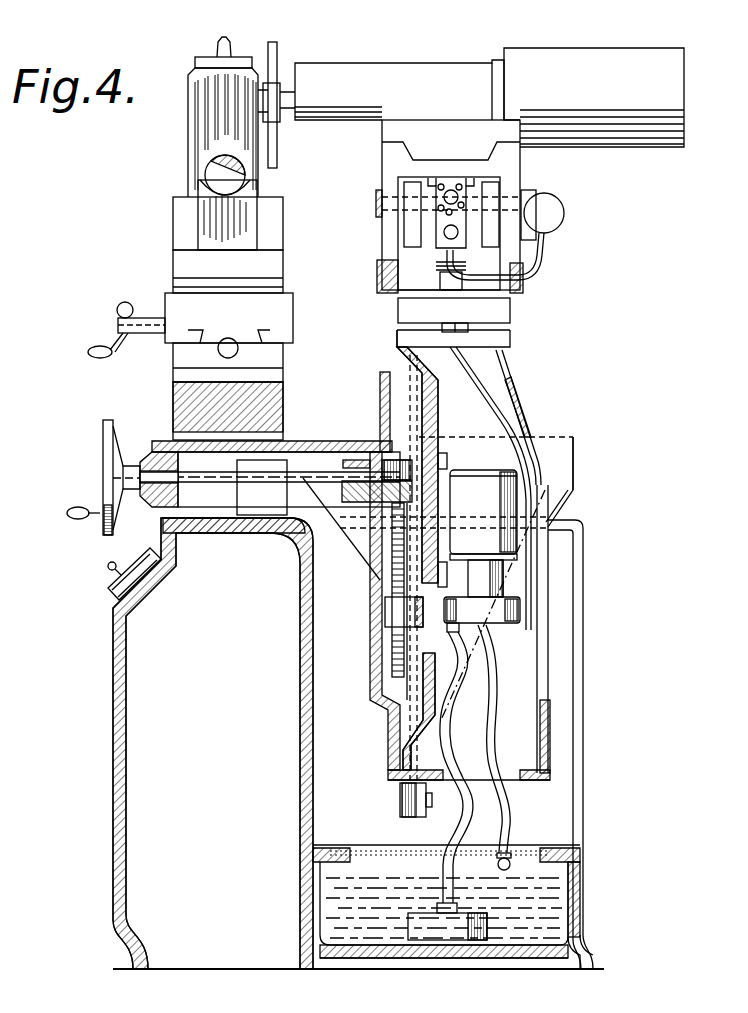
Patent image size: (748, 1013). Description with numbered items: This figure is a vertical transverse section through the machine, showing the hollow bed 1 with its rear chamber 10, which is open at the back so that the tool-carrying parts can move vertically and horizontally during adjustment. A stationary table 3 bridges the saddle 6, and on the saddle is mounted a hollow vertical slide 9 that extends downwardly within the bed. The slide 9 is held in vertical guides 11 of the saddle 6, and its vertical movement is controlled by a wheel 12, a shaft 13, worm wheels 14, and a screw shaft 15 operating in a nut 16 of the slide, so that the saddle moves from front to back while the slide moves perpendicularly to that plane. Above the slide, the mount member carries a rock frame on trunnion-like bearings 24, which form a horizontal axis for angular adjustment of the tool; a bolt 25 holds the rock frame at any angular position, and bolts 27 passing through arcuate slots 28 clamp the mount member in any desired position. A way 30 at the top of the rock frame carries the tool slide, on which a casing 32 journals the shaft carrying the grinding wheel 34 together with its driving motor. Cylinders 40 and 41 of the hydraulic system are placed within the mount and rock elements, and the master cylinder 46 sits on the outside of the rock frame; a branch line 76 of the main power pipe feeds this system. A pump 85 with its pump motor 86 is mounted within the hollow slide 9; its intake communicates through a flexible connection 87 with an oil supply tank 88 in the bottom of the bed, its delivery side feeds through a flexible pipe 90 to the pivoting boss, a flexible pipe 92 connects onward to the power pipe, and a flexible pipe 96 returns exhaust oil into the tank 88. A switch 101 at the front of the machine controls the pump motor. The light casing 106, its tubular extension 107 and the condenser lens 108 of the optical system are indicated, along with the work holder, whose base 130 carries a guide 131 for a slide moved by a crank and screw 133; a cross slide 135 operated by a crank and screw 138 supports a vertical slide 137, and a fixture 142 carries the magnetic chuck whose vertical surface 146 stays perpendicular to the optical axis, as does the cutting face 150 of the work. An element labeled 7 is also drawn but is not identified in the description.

The hollow bed 1 is at (585, 657).
The table 3 is at (283, 395).
The saddle 6 is at (322, 450).
The frame casing 7 is at (572, 497).
The hollow vertical slide 9 is at (510, 358).
The rear chamber 10 is at (560, 560).
The vertical guides 11 is at (400, 800).
The wheel 12 is at (103, 458).
The shaft 13 is at (382, 466).
The worm wheels 14 is at (355, 478).
The screw shaft 15 is at (392, 577).
The nut 16 is at (392, 625).
The trunnion-like bearings 24 is at (375, 198).
The bolt 25 is at (380, 288).
The bolts 27 is at (470, 328).
The arcuate slots 28 is at (500, 305).
The way 30 is at (420, 145).
The casing 32 is at (540, 57).
The grinding wheel 34 is at (277, 52).
The cylinder 40 is at (451, 190).
The cylinder 41 is at (450, 232).
The master cylinder 46 is at (563, 205).
The branch line 76 is at (538, 240).
The pump 85 is at (497, 625).
The pump motor 86 is at (515, 483).
The flexible connection 87 is at (460, 815).
The oil supply tank 88 is at (583, 893).
The flexible pipe 90 is at (510, 418).
The flexible pipe 92 is at (448, 267).
The flexible pipe 96 is at (497, 695).
The switch 101 is at (110, 580).
The casing 106 is at (188, 118).
The tubular extension 107 is at (258, 172).
The condenser lens 108 is at (205, 173).
The base 130 is at (285, 352).
The guide 131 is at (205, 343).
The crank and screw 133 is at (218, 353).
The cross slide 135 is at (283, 306).
The vertical slide 137 is at (265, 200).
The crank and screw 138 is at (150, 318).
The fixture 142 is at (268, 280).
The vertical surface 146 is at (185, 260).
The cutting face 150 is at (217, 226).